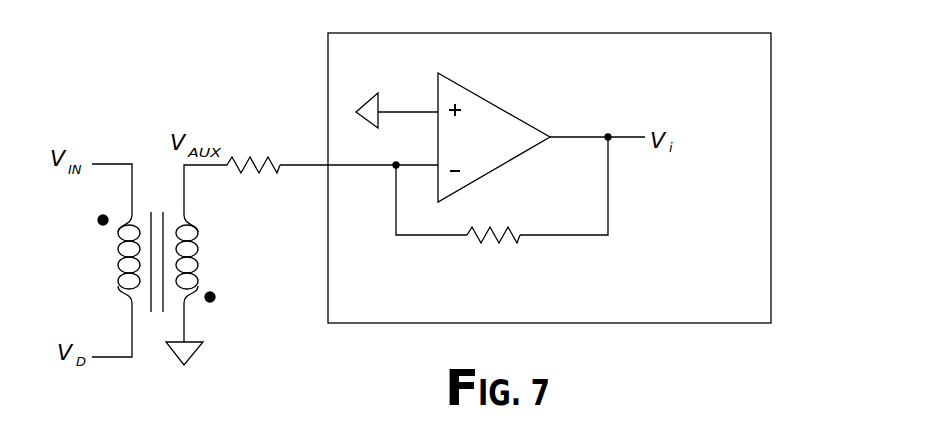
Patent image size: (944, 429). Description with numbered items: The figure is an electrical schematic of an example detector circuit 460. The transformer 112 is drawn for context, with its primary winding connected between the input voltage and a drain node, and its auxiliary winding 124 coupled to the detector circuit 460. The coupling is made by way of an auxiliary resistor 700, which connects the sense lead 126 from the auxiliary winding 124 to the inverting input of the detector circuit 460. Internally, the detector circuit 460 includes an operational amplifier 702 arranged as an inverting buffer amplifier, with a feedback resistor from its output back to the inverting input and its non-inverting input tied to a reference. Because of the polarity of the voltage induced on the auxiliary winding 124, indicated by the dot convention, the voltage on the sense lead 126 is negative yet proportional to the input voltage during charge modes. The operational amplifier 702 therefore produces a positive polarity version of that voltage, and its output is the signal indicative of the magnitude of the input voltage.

The transformer 112 is at (188, 184).
The auxiliary winding 124 is at (212, 242).
The sense lead 126 is at (199, 168).
The auxiliary resistor 700 is at (255, 150).
The operational amplifier 702 is at (513, 113).
The detector circuit 460 is at (771, 93).